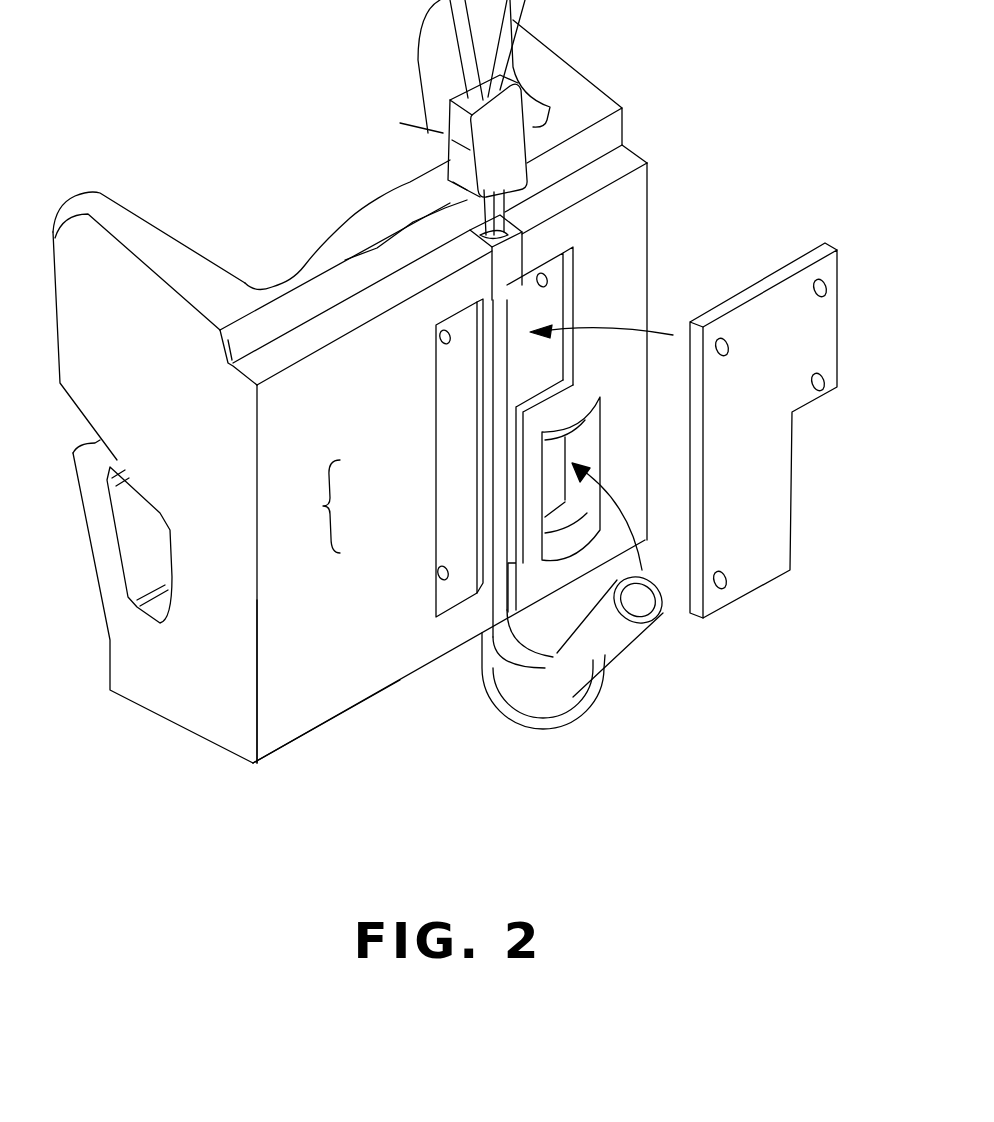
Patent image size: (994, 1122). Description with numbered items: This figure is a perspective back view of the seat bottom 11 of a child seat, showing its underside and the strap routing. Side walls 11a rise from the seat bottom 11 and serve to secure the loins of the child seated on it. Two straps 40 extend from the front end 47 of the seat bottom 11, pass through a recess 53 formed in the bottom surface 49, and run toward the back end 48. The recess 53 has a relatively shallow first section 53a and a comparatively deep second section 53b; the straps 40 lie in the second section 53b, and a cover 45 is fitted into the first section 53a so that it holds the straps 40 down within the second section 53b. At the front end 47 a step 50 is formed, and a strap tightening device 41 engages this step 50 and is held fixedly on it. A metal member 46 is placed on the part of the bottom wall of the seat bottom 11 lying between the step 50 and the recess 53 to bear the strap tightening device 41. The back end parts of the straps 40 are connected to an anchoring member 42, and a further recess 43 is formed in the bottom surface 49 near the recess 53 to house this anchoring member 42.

The seat bottom 11 is at (183, 693).
The side walls 11a is at (143, 280).
The straps 40 is at (525, 720).
The strap tightening device 41 is at (457, 140).
The anchoring member 42 is at (638, 652).
The recess 43 is at (585, 433).
The cover 45 is at (773, 452).
The metal member 46 is at (512, 256).
The front end 47 is at (312, 265).
The back end 48 is at (410, 673).
The bottom surface 49 is at (322, 690).
The step 50 is at (343, 318).
The recess 53 is at (428, 432).
The first section 53a is at (452, 430).
The second section 53b is at (488, 473).